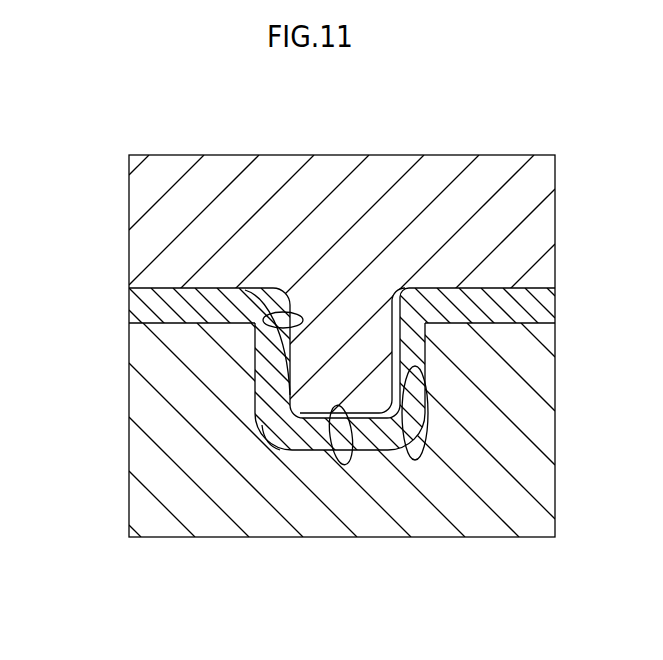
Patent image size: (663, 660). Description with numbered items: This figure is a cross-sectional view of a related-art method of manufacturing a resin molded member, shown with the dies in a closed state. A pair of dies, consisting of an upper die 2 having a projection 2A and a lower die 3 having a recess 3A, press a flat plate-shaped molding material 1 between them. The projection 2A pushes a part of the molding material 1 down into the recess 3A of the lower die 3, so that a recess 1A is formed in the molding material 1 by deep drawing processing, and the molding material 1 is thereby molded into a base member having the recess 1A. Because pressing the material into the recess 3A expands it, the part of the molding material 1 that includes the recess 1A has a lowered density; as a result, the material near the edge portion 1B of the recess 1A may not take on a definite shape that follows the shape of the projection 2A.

The molding material 1 is at (542, 308).
The recess 1A is at (338, 465).
The edge portion 1B is at (287, 336).
The upper die 2 is at (535, 227).
The projection 2A is at (332, 378).
The lower die 3 is at (533, 428).
The recess 3A is at (407, 458).